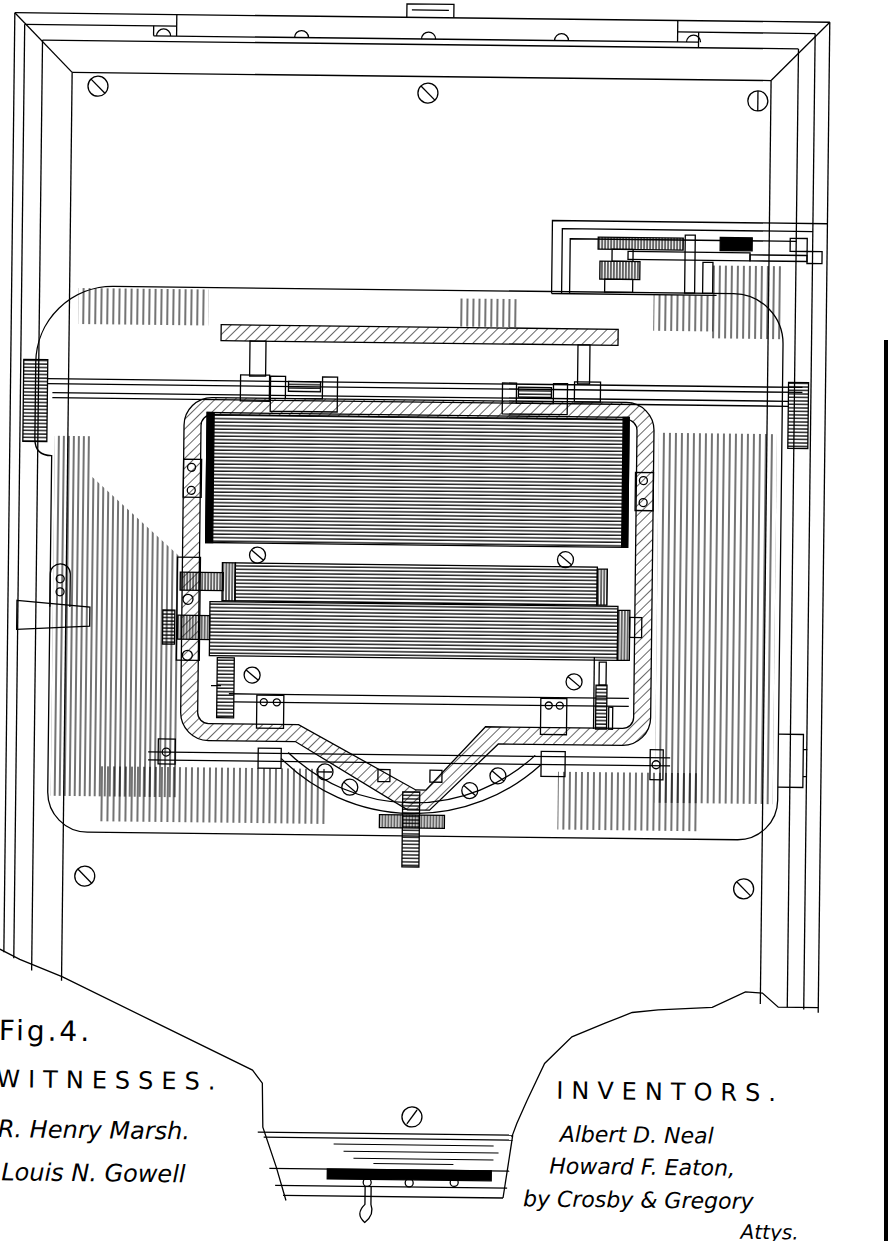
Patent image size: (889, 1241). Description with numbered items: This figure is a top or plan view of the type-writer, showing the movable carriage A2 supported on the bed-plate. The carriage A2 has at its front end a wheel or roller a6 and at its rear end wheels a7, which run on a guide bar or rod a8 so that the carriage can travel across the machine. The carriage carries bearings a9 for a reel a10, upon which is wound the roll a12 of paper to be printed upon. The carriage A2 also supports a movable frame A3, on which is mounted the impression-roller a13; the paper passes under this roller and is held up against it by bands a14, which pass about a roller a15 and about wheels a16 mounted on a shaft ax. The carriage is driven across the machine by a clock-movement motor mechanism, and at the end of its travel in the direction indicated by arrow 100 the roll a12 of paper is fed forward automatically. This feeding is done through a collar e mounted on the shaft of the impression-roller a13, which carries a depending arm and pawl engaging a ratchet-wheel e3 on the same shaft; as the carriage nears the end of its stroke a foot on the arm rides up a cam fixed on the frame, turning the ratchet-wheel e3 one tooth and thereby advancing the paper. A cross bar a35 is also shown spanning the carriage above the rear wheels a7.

The wheels a7 is at (299, 383).
The cross bar a35 is at (472, 328).
The guide bar or rod a8 is at (705, 403).
The reel a10 is at (623, 460).
The bearings a9 is at (183, 470).
The movable carriage A2 is at (655, 537).
The roller a15 is at (355, 560).
The roll of paper a12 is at (433, 562).
The collar e is at (183, 603).
The impression-roller a13 is at (604, 619).
The ratchet-wheel e3 is at (163, 631).
The bands a14 is at (225, 672).
The movable frame A3 is at (630, 705).
The shaft ax is at (426, 700).
The wheels a16 is at (217, 689).
The wheel or roller a6 is at (395, 812).
The arrow 100 is at (342, 846).